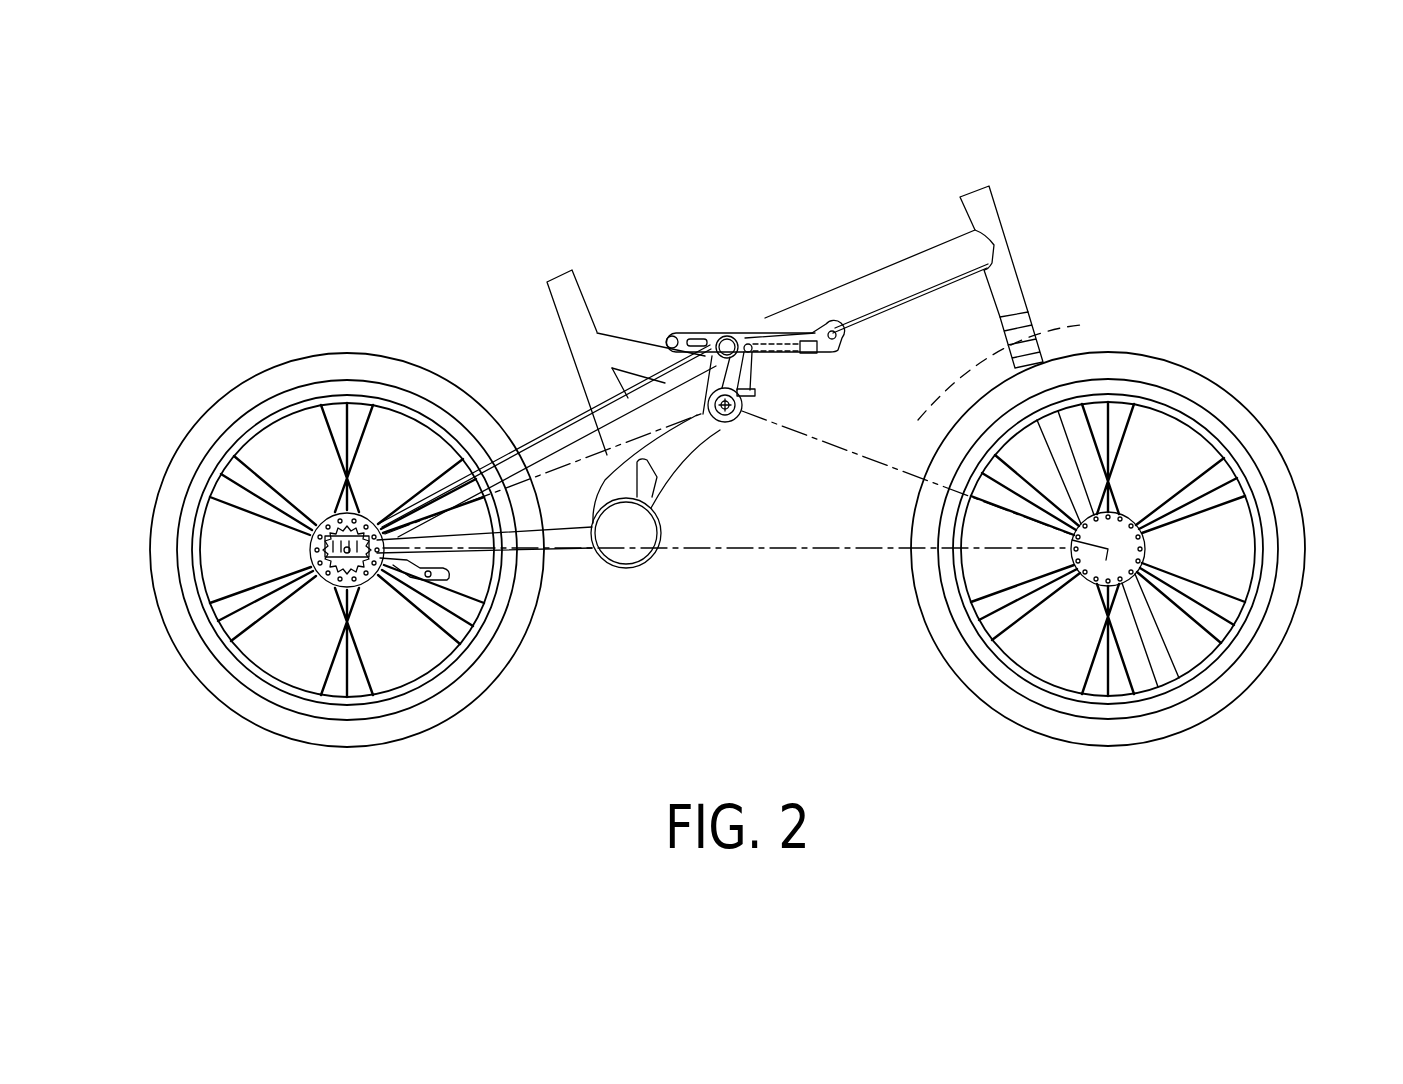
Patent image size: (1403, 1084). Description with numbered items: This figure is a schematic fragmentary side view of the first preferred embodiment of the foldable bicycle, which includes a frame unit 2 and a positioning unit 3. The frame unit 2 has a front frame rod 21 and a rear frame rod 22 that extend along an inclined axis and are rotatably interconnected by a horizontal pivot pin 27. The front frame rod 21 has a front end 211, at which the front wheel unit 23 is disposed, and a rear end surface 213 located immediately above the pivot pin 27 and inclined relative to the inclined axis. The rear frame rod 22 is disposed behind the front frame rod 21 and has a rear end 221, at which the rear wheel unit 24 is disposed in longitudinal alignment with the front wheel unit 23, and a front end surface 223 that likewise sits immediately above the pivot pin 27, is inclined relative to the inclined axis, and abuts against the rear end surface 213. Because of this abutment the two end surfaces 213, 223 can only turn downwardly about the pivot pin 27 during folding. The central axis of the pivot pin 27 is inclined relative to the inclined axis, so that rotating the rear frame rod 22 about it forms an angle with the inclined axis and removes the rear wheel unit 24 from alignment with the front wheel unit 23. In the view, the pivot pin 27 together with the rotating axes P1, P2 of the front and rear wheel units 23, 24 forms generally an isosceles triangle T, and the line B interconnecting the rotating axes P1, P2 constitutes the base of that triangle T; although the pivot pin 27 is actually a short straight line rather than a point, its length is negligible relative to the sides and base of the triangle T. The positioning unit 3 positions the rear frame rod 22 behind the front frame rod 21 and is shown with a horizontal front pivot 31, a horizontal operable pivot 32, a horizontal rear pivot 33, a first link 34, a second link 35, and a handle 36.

The frame unit 2 is at (1045, 281).
The front frame rod 21 is at (892, 264).
The front end 211 is at (1000, 229).
The rear end surface 213 is at (752, 380).
The rear frame rod 22 is at (673, 445).
The rear end 221 is at (350, 587).
The front end surface 223 is at (703, 332).
The front wheel unit 23 is at (1262, 424).
The rear wheel unit 24 is at (163, 480).
The horizontal pivot pin 27 is at (727, 411).
The positioning unit 3 is at (740, 305).
The horizontal front pivot 31 is at (790, 378).
The horizontal operable pivot 32 is at (826, 326).
The horizontal rear pivot 33 is at (720, 332).
The first link 34 is at (776, 333).
The second link 35 is at (812, 363).
The handle 36 is at (797, 322).
The line B is at (755, 562).
The rotating axis P1 is at (1108, 549).
The rotating axis P2 is at (320, 513).
The isosceles triangle T is at (1046, 331).